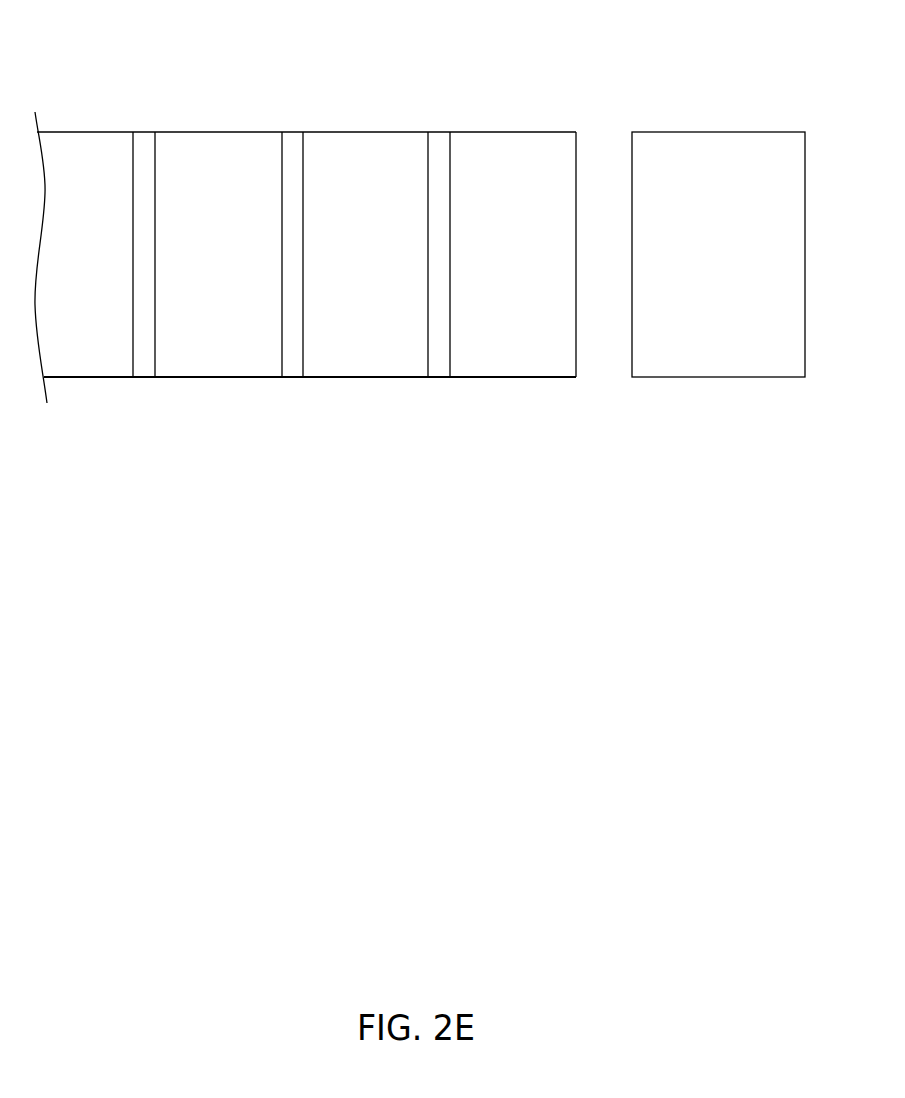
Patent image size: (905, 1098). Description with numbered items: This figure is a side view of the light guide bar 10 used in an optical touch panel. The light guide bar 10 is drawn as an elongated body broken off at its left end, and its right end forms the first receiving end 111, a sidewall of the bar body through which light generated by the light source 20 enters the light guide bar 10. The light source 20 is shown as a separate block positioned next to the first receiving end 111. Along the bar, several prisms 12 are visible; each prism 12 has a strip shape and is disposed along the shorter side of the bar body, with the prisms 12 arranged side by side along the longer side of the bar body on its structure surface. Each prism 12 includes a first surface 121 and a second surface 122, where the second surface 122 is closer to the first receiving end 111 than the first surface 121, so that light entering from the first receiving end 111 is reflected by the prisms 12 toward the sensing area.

The light guide bar 10 is at (347, 224).
The first receiving end 111 is at (576, 165).
The prism 12 is at (186, 202).
The first surface 121 is at (142, 135).
The second surface 122 is at (240, 227).
The light source 20 is at (683, 152).